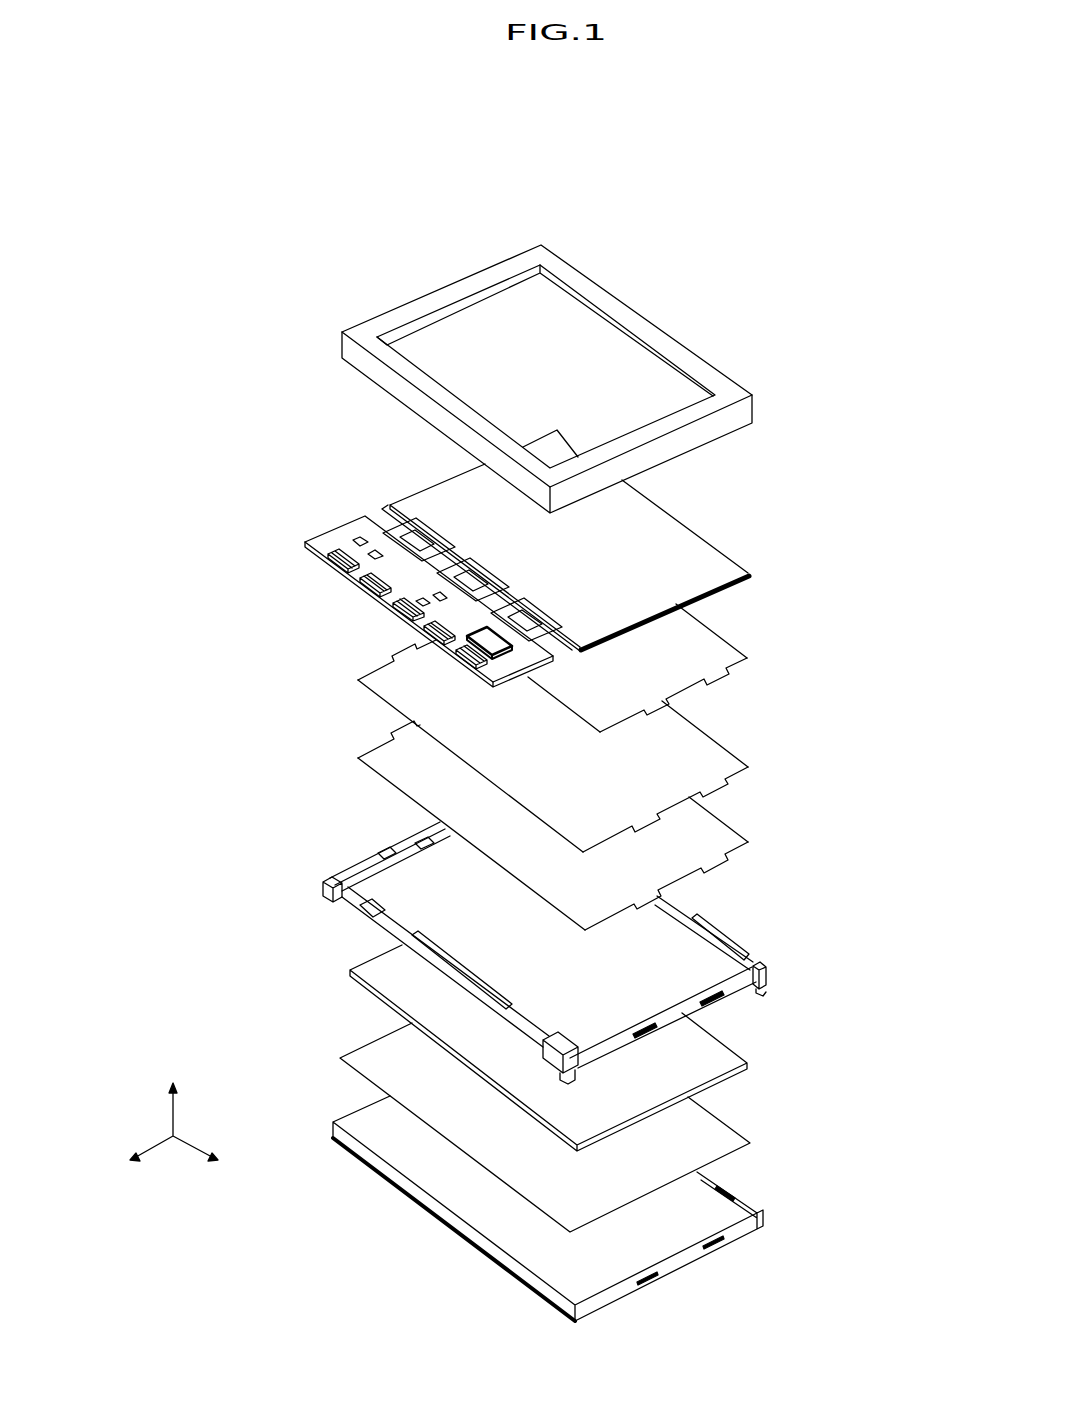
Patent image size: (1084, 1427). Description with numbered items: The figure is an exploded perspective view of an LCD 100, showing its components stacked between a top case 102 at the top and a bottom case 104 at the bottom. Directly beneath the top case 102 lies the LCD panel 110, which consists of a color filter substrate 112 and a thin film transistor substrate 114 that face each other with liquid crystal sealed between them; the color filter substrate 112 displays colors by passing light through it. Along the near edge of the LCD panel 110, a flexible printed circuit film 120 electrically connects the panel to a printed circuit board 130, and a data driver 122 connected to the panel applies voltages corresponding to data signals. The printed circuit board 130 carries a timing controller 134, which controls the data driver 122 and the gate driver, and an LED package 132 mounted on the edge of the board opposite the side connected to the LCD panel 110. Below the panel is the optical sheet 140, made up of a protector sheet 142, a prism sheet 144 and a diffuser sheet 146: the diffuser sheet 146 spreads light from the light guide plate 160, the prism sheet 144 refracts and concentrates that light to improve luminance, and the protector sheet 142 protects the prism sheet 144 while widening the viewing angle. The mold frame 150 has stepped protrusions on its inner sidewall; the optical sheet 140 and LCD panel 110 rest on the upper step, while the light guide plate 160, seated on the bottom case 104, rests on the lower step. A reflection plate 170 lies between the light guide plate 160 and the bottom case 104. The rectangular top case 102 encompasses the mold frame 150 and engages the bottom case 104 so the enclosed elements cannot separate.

The LCD 100 is at (867, 288).
The top case 102 is at (751, 405).
The bottom case 104 is at (742, 1233).
The LCD panel 110 is at (388, 408).
The color filter substrate 112 is at (408, 500).
The thin film transistor substrate 114 is at (391, 507).
The flexible printed circuit film 120 is at (305, 543).
The data driver 122 is at (383, 532).
The printed circuit board 130 is at (326, 556).
The LED package 132 is at (358, 588).
The timing controller 134 is at (463, 636).
The optical sheet 140 is at (842, 656).
The protector sheet 142 is at (747, 658).
The prism sheet 144 is at (748, 767).
The diffuser sheet 146 is at (748, 842).
The mold frame 150 is at (766, 975).
The light guide plate 160 is at (742, 1058).
The reflection plate 170 is at (737, 1141).